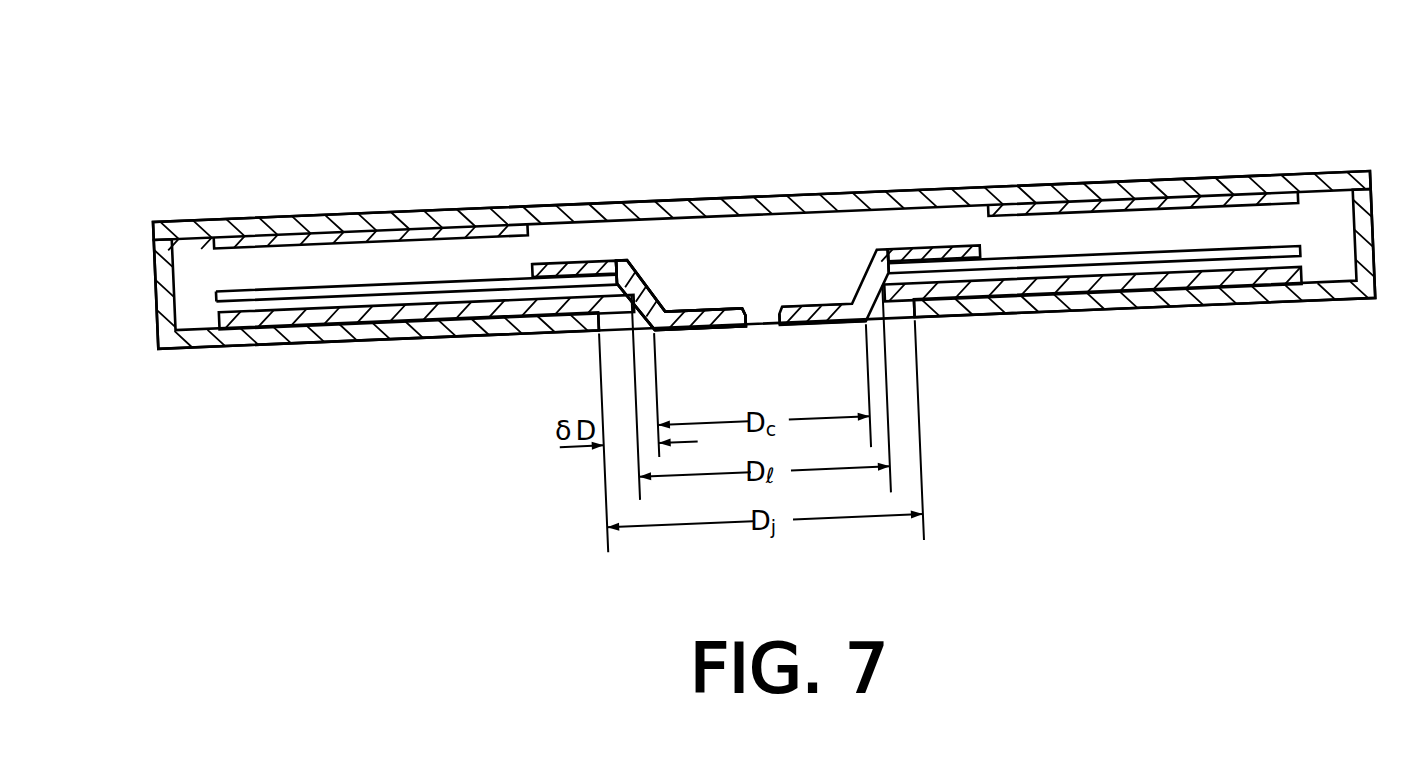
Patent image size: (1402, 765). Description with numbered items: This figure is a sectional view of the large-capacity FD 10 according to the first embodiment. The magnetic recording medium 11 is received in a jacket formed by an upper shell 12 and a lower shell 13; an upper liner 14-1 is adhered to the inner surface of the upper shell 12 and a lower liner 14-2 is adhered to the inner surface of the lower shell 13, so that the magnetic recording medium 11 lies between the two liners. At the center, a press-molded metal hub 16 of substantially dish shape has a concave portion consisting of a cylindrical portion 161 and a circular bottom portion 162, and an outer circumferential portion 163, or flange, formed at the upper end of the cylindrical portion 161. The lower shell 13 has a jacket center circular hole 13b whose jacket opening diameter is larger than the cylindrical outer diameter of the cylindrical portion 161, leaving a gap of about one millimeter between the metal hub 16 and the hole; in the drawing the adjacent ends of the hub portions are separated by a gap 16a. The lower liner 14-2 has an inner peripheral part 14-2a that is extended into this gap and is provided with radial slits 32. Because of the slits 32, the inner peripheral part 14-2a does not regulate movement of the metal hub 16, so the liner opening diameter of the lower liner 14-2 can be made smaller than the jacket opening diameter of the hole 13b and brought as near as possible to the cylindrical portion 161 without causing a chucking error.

The large-capacity FD 10 is at (338, 174).
The magnetic recording medium 11 is at (262, 288).
The upper shell 12 is at (1130, 186).
The lower shell 13 is at (245, 340).
The jacket center circular hole 13b is at (892, 317).
The upper liner 14-1 is at (487, 226).
The lower liner 14-2 is at (397, 335).
The inner peripheral part 14-2a is at (612, 322).
The metal hub 16 is at (721, 312).
The gap between terminal contact members 16a is at (762, 312).
The slits 32 is at (610, 316).
The cylindrical portion 161 is at (665, 292).
The circular bottom portion 162 is at (710, 333).
The outer circumferential portion 163 is at (580, 279).